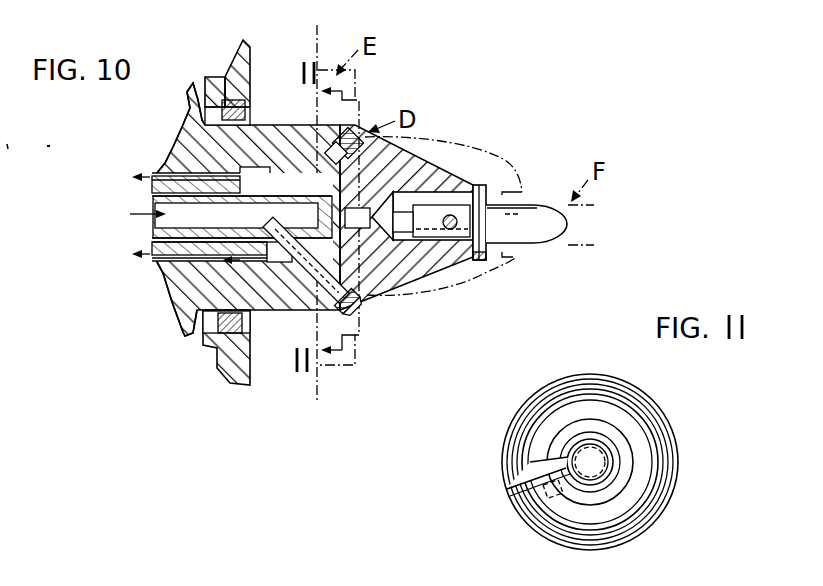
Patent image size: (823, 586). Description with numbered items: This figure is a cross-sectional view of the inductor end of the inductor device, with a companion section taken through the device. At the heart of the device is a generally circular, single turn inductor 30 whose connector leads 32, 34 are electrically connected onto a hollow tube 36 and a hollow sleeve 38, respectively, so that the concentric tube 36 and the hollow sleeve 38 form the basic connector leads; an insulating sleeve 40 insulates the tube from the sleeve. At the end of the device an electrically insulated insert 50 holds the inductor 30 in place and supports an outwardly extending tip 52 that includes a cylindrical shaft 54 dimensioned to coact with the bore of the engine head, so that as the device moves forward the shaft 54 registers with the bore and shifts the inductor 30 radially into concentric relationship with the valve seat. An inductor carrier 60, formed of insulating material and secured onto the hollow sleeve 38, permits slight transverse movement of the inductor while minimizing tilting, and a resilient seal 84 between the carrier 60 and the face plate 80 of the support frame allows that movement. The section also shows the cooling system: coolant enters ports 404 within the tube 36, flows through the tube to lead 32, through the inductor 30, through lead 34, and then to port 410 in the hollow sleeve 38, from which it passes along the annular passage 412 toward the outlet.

In FIG. 11, the inductor 30 is at (604, 393).
In FIG. 10, the connector lead 32 is at (312, 275).
In FIG. 11, the connector lead 32 is at (538, 461).
In FIG. 10, the connector lead 34 is at (244, 323).
In FIG. 11, the connector lead 34 is at (553, 503).
In FIG. 10, the hollow tube 36 is at (296, 165).
In FIG. 10, the hollow sleeve 38 is at (175, 170).
In FIG. 10, the insulating sleeve 40 is at (173, 247).
In FIG. 11, the insulating sleeve 40 is at (606, 463).
In FIG. 10, the electrically insulated insert 50 is at (448, 174).
In FIG. 11, the electrically insulated insert 50 is at (617, 421).
In FIG. 10, the tip 52 is at (525, 206).
In FIG. 10, the cylindrical shaft 54 is at (527, 240).
In FIG. 11, the cylindrical shaft 54 is at (607, 472).
In FIG. 10, the inductor carrier 60 is at (254, 134).
In FIG. 10, the face plate 80 is at (247, 60).
In FIG. 10, the seal 84 is at (232, 75).
In FIG. 10, the ports 404 is at (158, 226).
In FIG. 10, the port 410 is at (194, 288).
In FIG. 10, the annular passage 412 is at (336, 189).